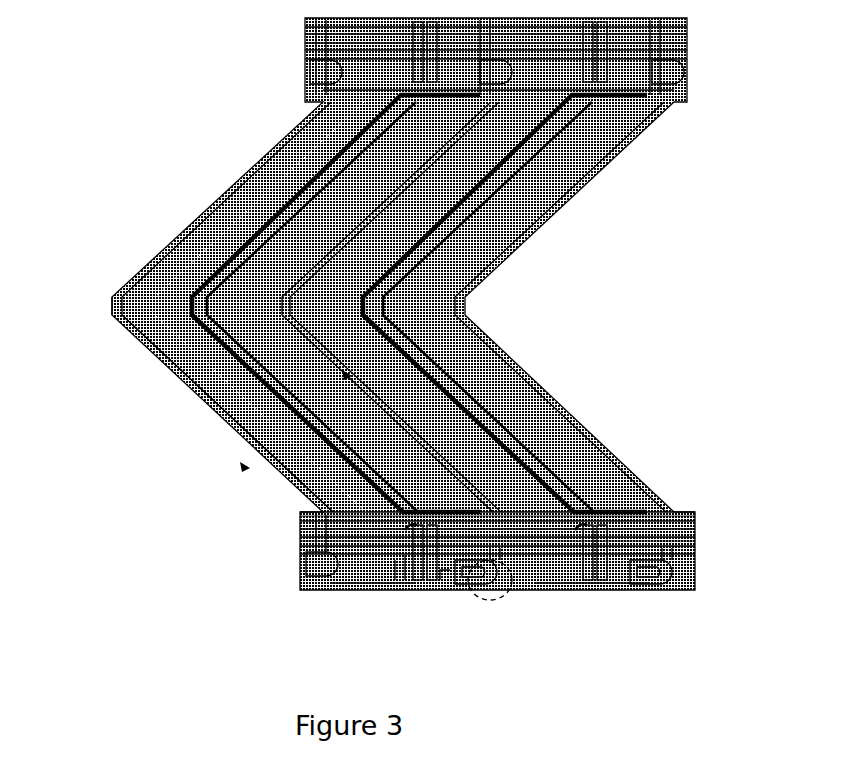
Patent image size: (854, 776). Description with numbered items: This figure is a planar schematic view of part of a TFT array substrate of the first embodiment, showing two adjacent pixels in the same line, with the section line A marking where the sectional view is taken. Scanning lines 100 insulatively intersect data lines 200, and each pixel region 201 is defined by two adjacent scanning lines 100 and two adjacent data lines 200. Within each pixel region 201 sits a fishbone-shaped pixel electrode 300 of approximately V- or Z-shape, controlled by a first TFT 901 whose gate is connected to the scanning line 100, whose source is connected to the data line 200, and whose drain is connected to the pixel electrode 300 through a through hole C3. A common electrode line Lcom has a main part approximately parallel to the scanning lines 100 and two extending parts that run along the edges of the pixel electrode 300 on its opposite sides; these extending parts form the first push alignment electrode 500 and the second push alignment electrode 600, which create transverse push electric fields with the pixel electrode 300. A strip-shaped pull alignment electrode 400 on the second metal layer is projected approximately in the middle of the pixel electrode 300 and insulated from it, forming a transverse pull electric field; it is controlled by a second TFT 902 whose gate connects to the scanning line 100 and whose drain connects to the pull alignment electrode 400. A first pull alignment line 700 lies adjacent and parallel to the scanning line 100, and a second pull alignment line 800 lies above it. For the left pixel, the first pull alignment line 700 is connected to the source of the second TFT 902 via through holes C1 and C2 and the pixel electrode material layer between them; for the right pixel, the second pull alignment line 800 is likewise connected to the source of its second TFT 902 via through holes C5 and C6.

The scanning line 100 is at (700, 588).
The data line 200 is at (305, 520).
The pixel region 201 is at (318, 99).
The pixel electrode 300 is at (290, 146).
The pull alignment electrode 400 is at (205, 200).
The first push alignment electrode 500 is at (205, 430).
The second push alignment electrode 600 is at (160, 360).
The first pull alignment line 700 is at (700, 547).
The second pull alignment line 800 is at (695, 522).
The first TFT 901 is at (505, 592).
The second TFT 902 is at (420, 582).
The through hole C1 is at (330, 585).
The through hole C2 is at (395, 580).
The through hole C3 is at (447, 588).
The through hole C5 is at (605, 455).
The through hole C6 is at (628, 467).
The common electrode line Lcom is at (110, 300).
The A-A' line A is at (283, 428).